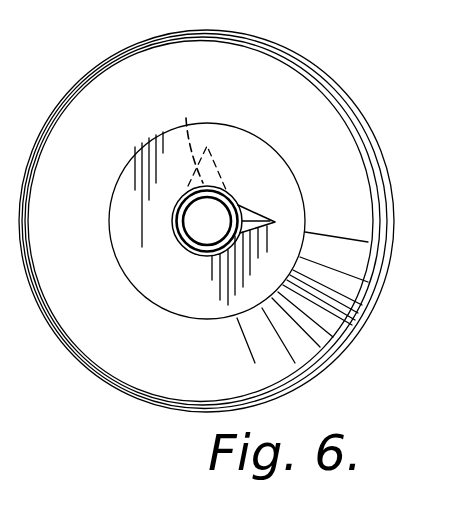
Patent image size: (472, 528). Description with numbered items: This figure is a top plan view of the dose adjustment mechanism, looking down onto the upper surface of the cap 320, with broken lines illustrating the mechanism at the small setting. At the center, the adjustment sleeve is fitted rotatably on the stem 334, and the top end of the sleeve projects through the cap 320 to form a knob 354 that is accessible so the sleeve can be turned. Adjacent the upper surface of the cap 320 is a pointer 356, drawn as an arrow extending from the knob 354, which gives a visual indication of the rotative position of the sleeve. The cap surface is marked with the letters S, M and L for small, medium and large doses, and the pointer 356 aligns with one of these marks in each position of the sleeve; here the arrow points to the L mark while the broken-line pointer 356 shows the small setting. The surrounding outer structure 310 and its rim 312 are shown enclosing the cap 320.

The disc 310 is at (241, 221).
The outer rim 312 is at (379, 200).
The cap 320 is at (284, 186).
The stem 334 is at (206, 250).
The knob 354 is at (183, 247).
The pointer 356 is at (184, 116).